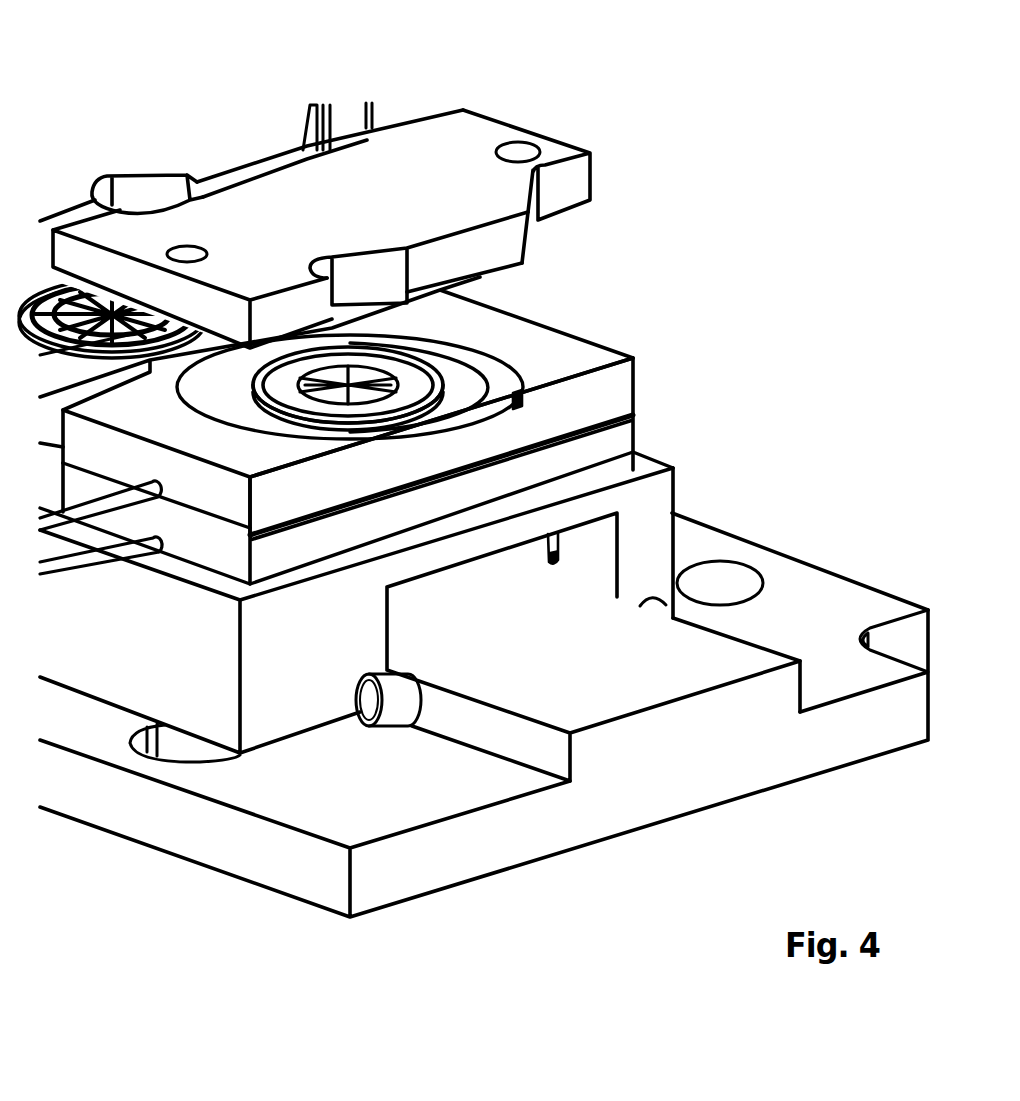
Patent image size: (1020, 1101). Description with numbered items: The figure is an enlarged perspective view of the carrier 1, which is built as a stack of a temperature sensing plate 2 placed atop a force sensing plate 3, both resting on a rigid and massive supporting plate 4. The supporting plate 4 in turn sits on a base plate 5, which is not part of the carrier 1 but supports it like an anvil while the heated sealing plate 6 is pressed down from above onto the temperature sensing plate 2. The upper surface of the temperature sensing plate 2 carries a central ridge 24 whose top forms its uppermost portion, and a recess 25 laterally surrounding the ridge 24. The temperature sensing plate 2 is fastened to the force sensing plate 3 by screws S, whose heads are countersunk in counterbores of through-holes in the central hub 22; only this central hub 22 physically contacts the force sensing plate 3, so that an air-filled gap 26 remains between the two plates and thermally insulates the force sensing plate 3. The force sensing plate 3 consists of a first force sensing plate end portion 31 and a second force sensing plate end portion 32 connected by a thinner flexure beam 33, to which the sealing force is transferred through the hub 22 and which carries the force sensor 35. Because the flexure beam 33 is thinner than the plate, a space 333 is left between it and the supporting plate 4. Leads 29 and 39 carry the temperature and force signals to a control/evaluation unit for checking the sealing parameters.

The carrier 1 is at (622, 318).
The temperature sensing plate 2 is at (645, 373).
The force sensing plate 3 is at (645, 445).
The supporting plate 4 is at (683, 502).
The base plate 5 is at (450, 877).
The sealing plate 6 is at (444, 158).
The central hub 22 is at (447, 467).
The ridge 24 is at (427, 373).
The recess 25 is at (463, 367).
The gap 26 is at (645, 413).
The leads 29 is at (58, 520).
The first force sensing plate end portion 31 is at (280, 563).
The second force sensing plate end portion 32 is at (617, 470).
The flexure beam 33 is at (556, 500).
The force sensor 35 is at (507, 502).
The leads 39 is at (120, 557).
The space 333 is at (358, 549).
The screws S is at (340, 367).